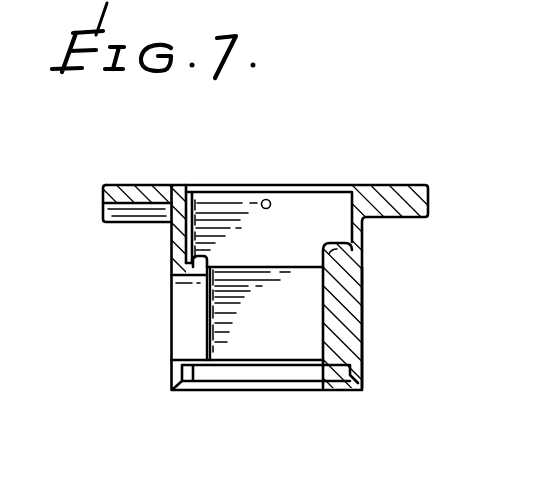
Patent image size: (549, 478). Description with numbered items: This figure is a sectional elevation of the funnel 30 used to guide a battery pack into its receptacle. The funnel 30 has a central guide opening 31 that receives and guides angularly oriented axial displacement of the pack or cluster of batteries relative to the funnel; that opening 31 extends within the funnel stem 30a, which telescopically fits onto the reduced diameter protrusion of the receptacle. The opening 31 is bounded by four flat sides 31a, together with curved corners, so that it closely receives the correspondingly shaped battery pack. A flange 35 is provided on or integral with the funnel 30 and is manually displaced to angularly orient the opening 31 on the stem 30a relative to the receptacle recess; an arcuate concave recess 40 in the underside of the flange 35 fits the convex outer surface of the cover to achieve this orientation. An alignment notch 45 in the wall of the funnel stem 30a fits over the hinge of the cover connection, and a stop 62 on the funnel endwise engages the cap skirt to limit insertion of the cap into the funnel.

The funnel 30 is at (330, 168).
The funnel stem 30a is at (350, 319).
The central guide opening 31 is at (272, 335).
The flat sides 31a is at (239, 212).
The flange 35 is at (400, 187).
The arcuate concave recess 40 is at (124, 220).
The alignment notch 45 is at (182, 316).
The stop 62 is at (362, 247).